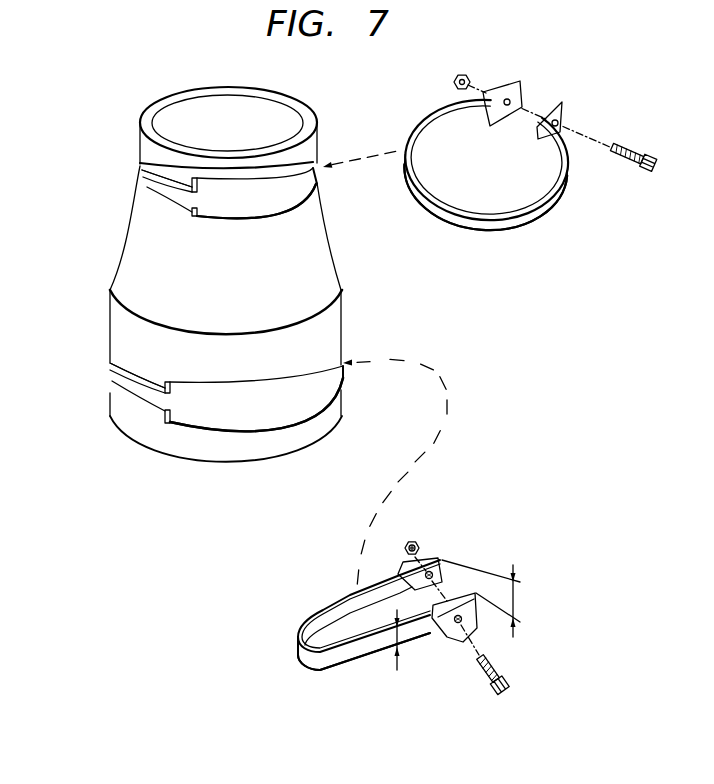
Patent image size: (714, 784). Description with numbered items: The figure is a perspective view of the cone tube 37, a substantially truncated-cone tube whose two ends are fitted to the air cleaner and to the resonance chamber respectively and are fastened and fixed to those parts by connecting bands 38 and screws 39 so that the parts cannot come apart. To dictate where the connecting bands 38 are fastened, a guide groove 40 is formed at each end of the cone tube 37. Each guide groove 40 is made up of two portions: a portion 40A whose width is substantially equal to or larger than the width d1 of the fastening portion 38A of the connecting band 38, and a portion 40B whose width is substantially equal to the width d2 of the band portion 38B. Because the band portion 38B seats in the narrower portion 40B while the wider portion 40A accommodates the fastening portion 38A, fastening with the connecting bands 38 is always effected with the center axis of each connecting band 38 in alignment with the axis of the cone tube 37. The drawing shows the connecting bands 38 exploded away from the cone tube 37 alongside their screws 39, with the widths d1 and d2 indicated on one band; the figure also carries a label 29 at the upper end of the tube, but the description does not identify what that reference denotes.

The cone tube 37 is at (118, 140).
The upper opening 29 is at (289, 188).
The guide groove 40 is at (215, 412).
The portion 40A is at (287, 208).
The portion 40B is at (146, 190).
The connecting band 38 is at (573, 197).
The fastening portion 38A is at (556, 108).
The band portion 38B is at (505, 230).
The screw 39 is at (625, 148).
The width of the fastening portion d1 is at (515, 601).
The width of the band portion d2 is at (399, 638).